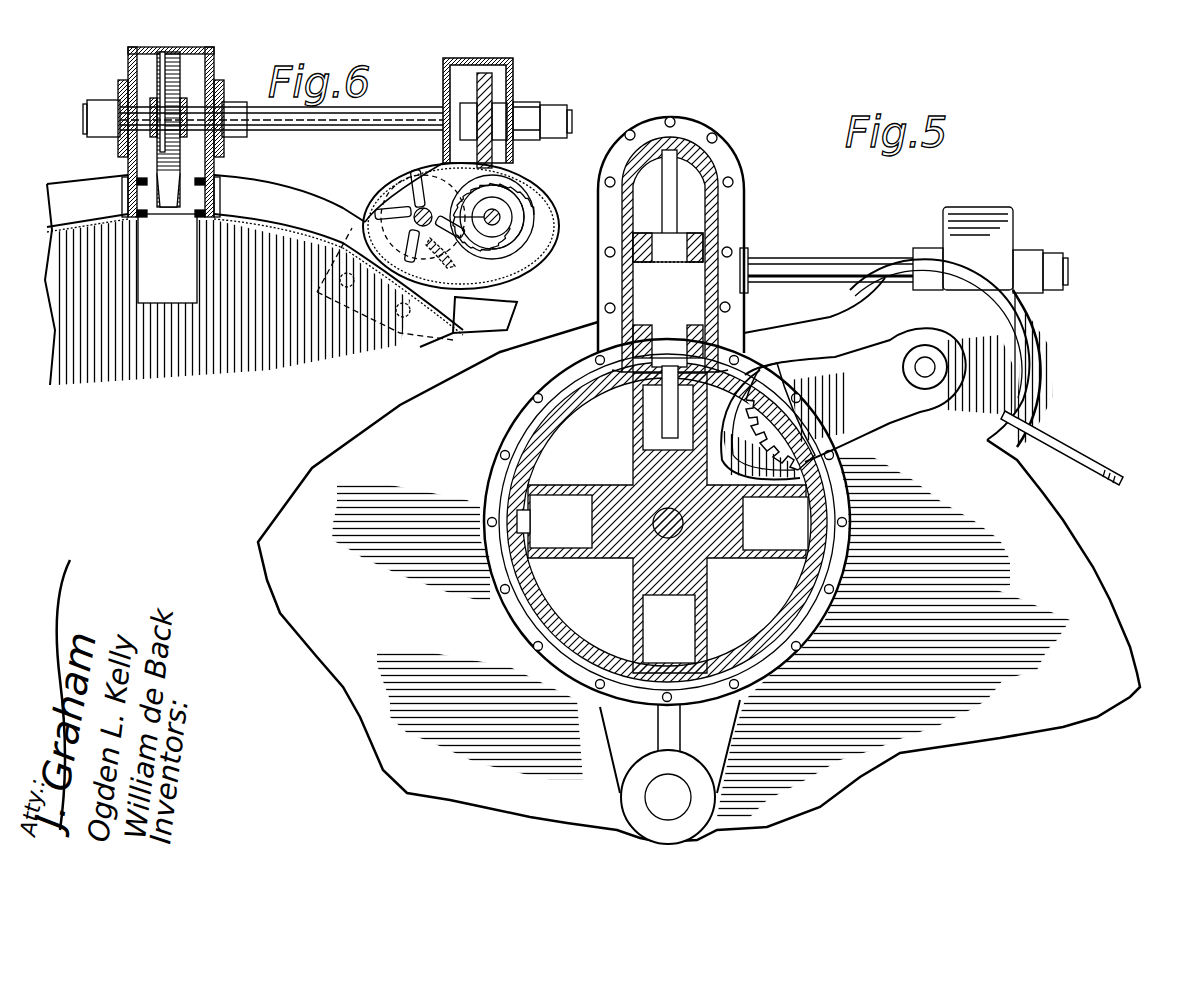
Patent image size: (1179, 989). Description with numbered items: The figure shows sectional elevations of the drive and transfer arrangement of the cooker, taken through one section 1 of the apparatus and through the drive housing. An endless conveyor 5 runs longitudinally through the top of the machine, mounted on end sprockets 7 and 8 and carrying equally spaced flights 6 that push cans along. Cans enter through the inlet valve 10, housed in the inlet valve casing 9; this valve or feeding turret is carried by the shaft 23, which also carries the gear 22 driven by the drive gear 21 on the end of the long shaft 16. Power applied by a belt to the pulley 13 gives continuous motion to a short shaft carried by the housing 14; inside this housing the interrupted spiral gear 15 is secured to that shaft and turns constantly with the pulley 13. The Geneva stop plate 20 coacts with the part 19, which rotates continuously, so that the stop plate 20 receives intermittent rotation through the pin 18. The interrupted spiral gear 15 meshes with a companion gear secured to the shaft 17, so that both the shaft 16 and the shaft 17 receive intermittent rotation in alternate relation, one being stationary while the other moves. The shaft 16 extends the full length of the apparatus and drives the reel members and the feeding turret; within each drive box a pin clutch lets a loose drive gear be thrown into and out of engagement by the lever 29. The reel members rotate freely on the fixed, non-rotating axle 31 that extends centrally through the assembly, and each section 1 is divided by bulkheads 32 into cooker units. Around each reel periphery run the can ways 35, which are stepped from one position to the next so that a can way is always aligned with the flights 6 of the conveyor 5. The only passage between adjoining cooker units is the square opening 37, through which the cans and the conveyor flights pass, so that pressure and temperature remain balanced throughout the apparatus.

In FIG. 5, the section 1 is at (1113, 610).
In FIG. 5, the endless conveyor 5 is at (690, 243).
In FIG. 5, the flights 6 is at (672, 195).
In FIG. 5, the end sprocket 7 is at (814, 230).
In FIG. 6, the end sprocket 8 is at (182, 78).
In FIG. 5, the inlet valve casing 9 is at (800, 625).
In FIG. 5, the inlet valve 10 is at (727, 553).
In FIG. 6, the pulley 13 is at (547, 268).
In FIG. 6, the housing 14 is at (513, 90).
In FIG. 5, the housing 14 is at (1030, 332).
In FIG. 6, the interrupted spiral gear 15 is at (503, 180).
In FIG. 6, the shaft 16 is at (423, 215).
In FIG. 5, the shaft 16 is at (925, 367).
In FIG. 6, the shaft 17 is at (318, 128).
In FIG. 5, the shaft 17 is at (886, 255).
In FIG. 6, the pin 18 is at (440, 247).
In FIG. 5, the pin 18 is at (1000, 357).
In FIG. 6, the Geneva part 19 is at (500, 207).
In FIG. 6, the Geneva stop plate 20 is at (413, 213).
In FIG. 5, the drive gear 21 is at (888, 410).
In FIG. 5, the gear 22 is at (765, 367).
In FIG. 5, the shaft 23 is at (685, 522).
In FIG. 5, the lever 29 is at (1067, 443).
In FIG. 5, the axle 31 is at (658, 805).
In FIG. 6, the bulkheads 32 is at (281, 280).
In FIG. 5, the can ways 35 is at (775, 538).
In FIG. 6, the square opening 37 is at (167, 258).